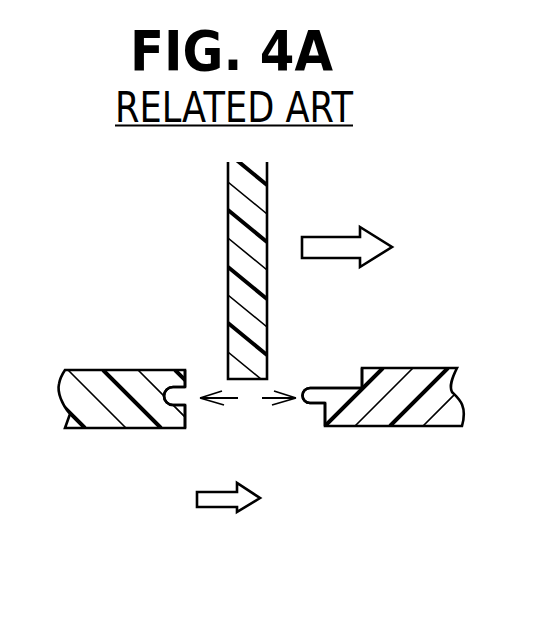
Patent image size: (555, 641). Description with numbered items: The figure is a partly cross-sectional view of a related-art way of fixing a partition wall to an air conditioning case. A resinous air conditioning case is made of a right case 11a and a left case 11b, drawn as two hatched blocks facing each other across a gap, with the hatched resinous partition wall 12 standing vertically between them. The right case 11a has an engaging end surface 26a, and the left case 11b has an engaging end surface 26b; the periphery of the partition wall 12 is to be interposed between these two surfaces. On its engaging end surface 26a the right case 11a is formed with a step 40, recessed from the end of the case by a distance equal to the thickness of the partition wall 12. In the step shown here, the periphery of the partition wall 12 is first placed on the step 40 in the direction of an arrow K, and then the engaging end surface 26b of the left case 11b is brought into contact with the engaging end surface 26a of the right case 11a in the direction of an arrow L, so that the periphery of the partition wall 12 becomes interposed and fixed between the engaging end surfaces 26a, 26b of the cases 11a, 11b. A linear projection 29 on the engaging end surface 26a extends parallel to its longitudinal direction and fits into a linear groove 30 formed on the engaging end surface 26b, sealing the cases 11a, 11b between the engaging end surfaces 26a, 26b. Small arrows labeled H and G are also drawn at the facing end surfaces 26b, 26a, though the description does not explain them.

The partition wall 12 is at (228, 219).
The right case 11a is at (423, 426).
The left case 11b is at (72, 430).
The engaging end surface 26a is at (323, 413).
The engaging end surface 26b is at (187, 412).
The linear projection 29 is at (304, 388).
The linear groove 30 is at (178, 397).
The step 40 is at (363, 382).
The arrow K is at (333, 237).
The arrow L is at (213, 507).
The gap H is at (232, 402).
The gap G is at (267, 402).